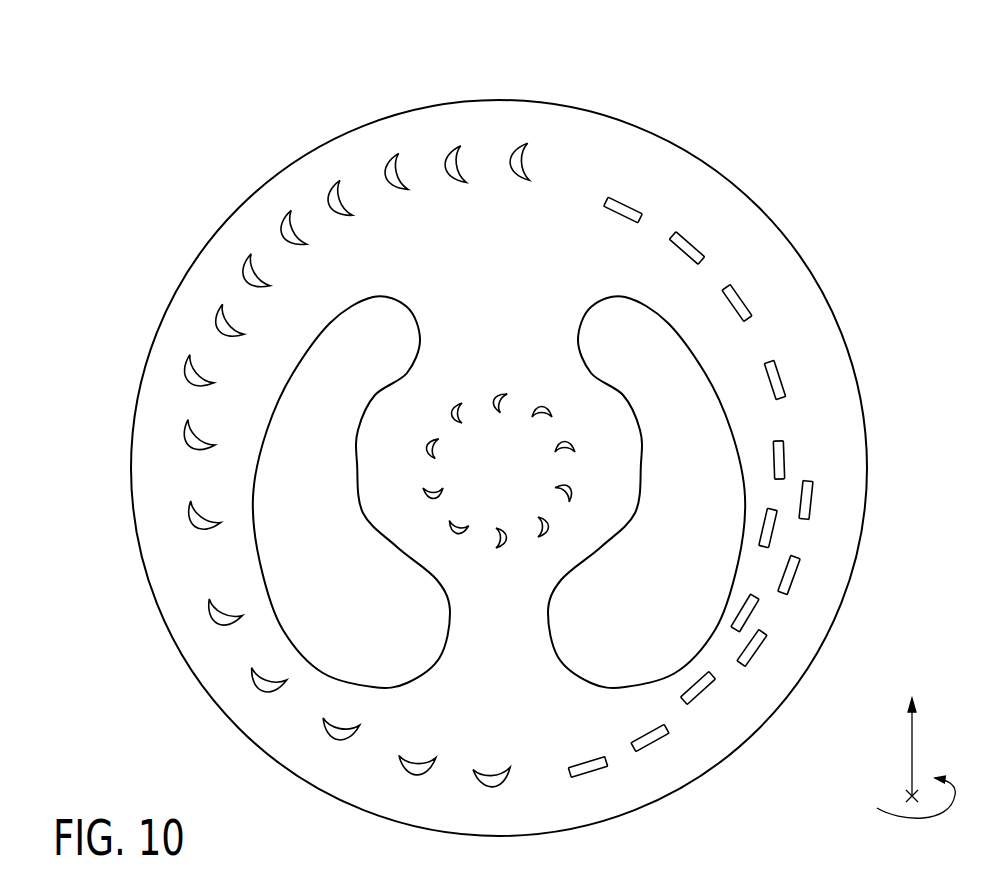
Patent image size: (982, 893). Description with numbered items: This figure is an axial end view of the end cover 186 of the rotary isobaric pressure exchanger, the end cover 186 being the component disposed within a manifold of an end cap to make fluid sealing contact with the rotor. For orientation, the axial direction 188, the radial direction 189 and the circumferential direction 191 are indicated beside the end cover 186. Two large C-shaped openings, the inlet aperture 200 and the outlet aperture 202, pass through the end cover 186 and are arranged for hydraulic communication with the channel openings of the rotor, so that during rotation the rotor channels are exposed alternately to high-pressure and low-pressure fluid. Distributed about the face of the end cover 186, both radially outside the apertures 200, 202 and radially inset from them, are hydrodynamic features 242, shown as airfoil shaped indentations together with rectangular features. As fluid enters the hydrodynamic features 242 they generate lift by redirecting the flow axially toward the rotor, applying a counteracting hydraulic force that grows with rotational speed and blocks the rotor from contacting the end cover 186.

The end cover 186 is at (760, 205).
The hydrodynamic features 242 is at (614, 74).
The outlet aperture 202 is at (434, 660).
The inlet aperture 200 is at (565, 657).
The axial direction 188 is at (905, 797).
The radial direction 189 is at (912, 752).
The circumferential direction 191 is at (900, 815).